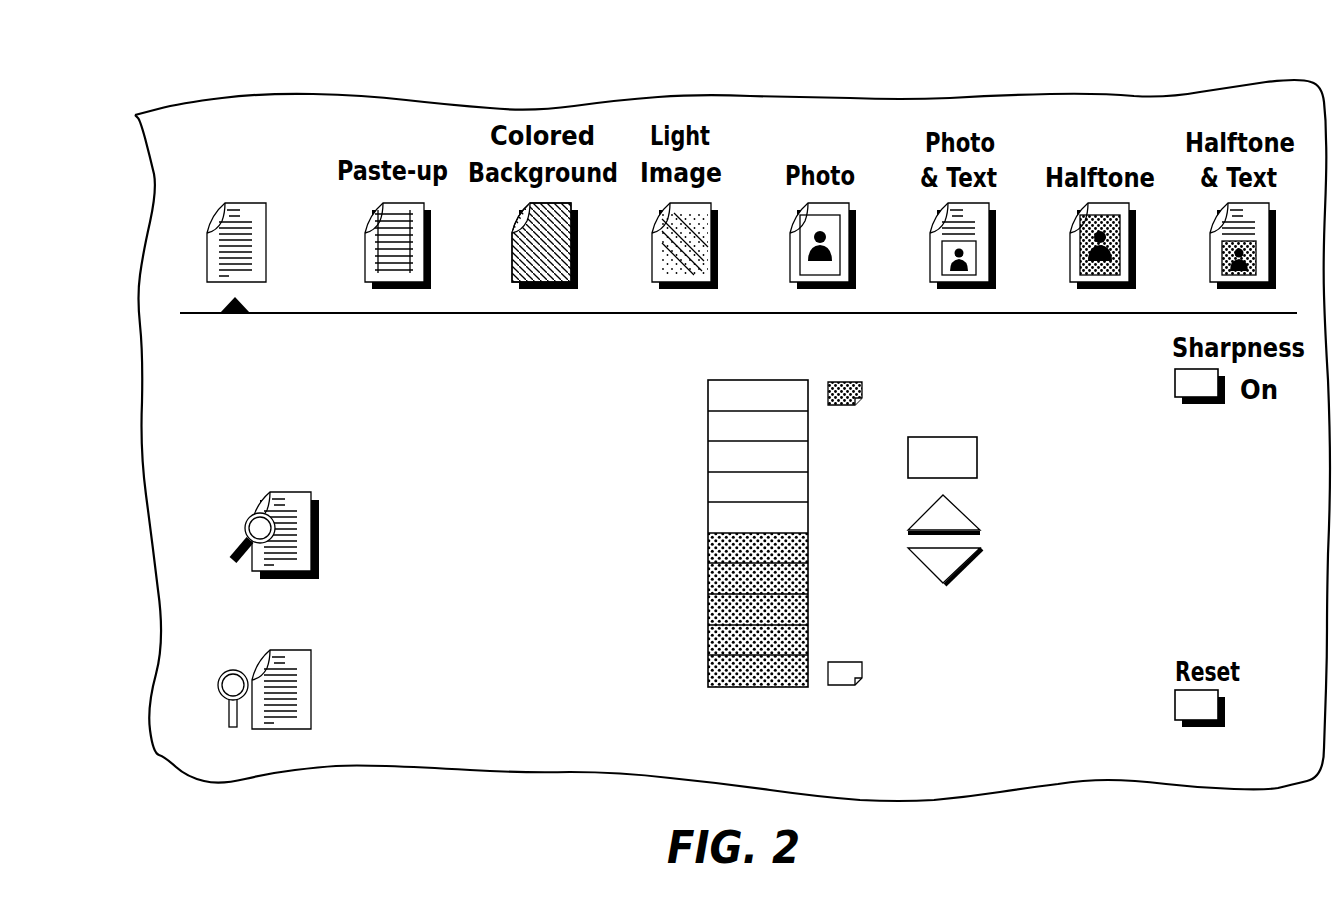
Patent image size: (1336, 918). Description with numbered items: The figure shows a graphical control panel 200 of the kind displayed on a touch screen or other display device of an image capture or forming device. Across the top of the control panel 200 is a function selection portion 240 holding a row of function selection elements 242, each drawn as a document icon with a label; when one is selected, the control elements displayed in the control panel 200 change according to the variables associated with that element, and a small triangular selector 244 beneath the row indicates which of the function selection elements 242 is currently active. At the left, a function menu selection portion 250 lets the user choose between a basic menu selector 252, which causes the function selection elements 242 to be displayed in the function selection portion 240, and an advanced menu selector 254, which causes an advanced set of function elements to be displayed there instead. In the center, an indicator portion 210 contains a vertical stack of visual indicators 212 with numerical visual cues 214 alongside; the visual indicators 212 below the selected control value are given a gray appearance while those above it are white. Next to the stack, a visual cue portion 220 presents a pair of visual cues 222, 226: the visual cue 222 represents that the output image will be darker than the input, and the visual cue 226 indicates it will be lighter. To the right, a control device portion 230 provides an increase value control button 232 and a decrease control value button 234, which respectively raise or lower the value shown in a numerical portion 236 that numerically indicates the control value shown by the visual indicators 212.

The graphical control panel 200 is at (989, 72).
The indicator portion 210 is at (733, 565).
The visual indicators 212 is at (758, 672).
The numerical visual cues 214 is at (688, 638).
The visual cue portion 220 is at (883, 539).
The visual cue 222 is at (863, 388).
The visual cue 226 is at (863, 670).
The control device portion 230 is at (957, 504).
The increase value control button 232 is at (925, 523).
The decrease control value button 234 is at (950, 563).
The numerical portion 236 is at (978, 455).
The function selection portion 240 is at (206, 256).
The function selection elements 242 is at (267, 267).
The selector 244 is at (250, 302).
The function menu selection portion 250 is at (234, 594).
The basic menu selector 252 is at (310, 695).
The advanced menu selector 254 is at (308, 493).